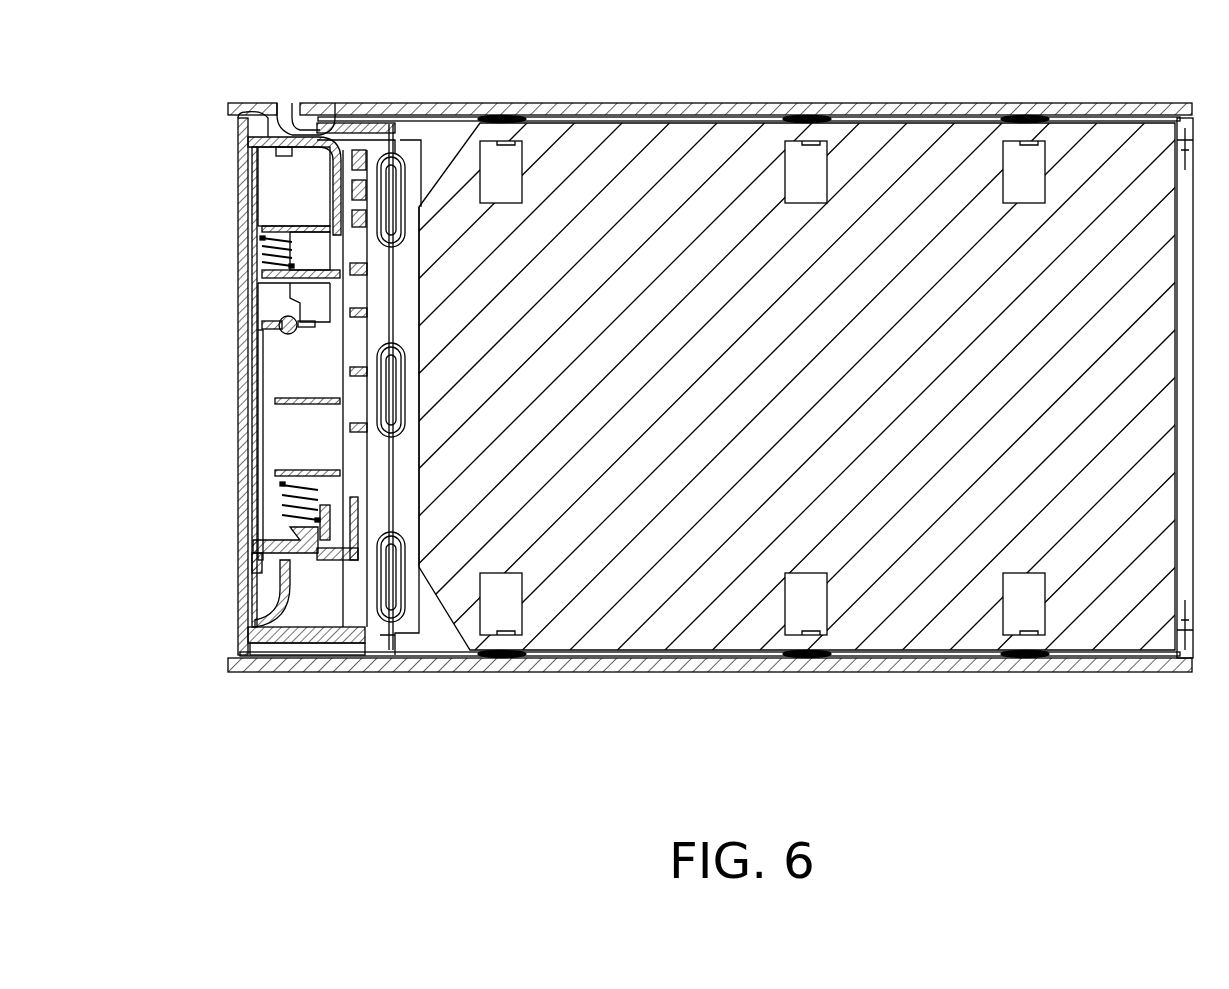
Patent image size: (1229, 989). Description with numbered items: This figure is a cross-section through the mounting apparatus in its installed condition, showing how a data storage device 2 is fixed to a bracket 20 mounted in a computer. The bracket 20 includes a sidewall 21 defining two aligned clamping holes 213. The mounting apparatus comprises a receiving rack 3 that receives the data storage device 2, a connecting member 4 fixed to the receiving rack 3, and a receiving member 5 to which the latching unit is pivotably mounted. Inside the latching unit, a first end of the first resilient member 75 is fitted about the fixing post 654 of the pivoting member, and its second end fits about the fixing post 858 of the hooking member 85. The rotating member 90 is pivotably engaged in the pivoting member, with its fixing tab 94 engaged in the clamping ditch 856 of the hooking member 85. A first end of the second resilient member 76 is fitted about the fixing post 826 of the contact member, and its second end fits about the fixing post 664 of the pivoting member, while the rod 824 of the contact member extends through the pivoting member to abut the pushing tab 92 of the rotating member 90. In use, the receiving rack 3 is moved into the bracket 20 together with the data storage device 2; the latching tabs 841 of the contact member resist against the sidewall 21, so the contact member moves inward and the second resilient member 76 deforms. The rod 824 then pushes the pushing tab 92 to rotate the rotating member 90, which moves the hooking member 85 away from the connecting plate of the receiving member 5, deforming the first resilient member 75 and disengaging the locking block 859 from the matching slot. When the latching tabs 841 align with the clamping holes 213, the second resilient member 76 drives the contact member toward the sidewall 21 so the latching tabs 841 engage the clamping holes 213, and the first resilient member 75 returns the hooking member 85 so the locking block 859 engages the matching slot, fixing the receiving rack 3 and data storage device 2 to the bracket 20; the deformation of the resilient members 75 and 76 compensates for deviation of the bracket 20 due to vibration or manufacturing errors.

The data storage device 2 is at (862, 148).
The receiving rack 3 is at (612, 663).
The connecting member 4 is at (382, 655).
The receiving member 5 is at (318, 648).
The bracket 20 is at (800, 665).
The sidewall 21 is at (497, 103).
The clamping holes 213 is at (292, 100).
The latching tabs 841 is at (290, 115).
The fixing post 826 is at (283, 237).
The second resilient member 76 is at (270, 240).
The fixing post 664 is at (268, 270).
The rod 824 is at (300, 290).
The clamping ditch 856 is at (275, 325).
The fixing tab 94 is at (288, 335).
The rotating member 90 is at (305, 330).
The pushing tab 92 is at (278, 400).
The hooking member 85 is at (258, 430).
The fixing post 654 is at (280, 487).
The first resilient member 75 is at (280, 512).
The fixing post 858 is at (280, 540).
The locking block 859 is at (275, 582).